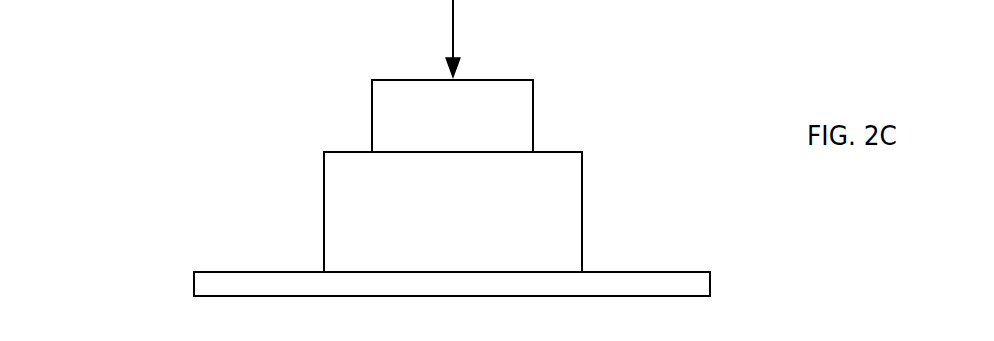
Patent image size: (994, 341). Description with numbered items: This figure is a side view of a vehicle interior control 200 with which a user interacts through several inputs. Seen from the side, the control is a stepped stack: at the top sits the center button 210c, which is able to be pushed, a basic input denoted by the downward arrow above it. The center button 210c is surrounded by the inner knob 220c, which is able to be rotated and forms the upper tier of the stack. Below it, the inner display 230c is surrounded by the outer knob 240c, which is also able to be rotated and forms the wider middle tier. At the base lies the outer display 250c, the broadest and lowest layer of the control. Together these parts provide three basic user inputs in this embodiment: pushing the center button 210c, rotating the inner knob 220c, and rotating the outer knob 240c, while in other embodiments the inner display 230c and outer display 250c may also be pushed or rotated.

The vehicle interior control 200 is at (104, 97).
The center button 210c is at (487, 79).
The inner knob 220c is at (492, 117).
The inner display 230c is at (548, 152).
The outer knob 240c is at (537, 222).
The outer display 250c is at (660, 272).